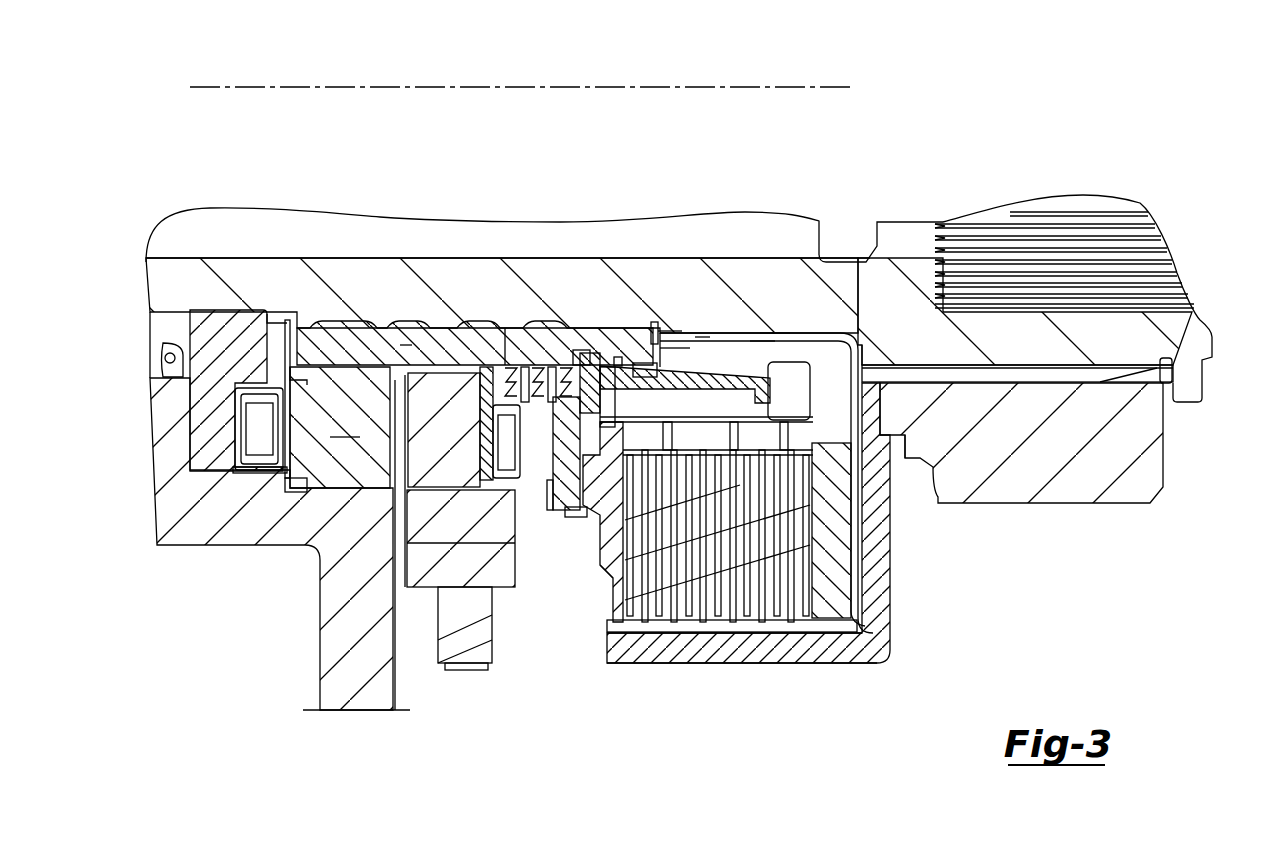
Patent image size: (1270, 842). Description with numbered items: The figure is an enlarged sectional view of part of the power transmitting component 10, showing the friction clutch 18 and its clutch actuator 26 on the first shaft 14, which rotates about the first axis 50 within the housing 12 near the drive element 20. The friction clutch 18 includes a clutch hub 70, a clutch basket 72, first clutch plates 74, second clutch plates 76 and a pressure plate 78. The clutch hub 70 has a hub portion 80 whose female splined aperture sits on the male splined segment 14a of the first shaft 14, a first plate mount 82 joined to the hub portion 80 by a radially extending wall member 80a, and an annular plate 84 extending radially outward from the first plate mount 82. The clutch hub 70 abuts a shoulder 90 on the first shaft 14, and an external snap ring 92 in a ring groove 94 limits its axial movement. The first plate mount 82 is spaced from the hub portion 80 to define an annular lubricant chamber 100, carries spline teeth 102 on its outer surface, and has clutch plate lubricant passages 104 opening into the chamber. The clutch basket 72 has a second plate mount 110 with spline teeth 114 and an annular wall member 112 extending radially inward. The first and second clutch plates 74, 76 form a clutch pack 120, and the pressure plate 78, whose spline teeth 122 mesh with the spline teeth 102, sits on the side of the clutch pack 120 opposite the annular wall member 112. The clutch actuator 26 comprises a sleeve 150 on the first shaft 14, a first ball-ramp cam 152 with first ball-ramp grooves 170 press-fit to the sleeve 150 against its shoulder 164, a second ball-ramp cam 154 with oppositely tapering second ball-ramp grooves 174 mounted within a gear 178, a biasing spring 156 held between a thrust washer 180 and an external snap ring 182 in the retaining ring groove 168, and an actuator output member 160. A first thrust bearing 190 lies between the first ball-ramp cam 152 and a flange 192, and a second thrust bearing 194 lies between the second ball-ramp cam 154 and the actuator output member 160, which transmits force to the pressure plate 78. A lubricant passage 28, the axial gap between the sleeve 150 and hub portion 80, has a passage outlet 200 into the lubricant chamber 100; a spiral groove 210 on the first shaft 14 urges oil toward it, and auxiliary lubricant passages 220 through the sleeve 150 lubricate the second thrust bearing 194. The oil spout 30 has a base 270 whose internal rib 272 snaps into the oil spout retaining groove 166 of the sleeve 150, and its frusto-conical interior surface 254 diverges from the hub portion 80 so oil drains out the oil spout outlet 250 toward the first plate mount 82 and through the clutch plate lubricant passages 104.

The power transmitting component 10 is at (1000, 140).
The housing 12 is at (173, 527).
The first shaft 14 is at (172, 275).
The male splined segment 14a is at (722, 330).
The friction clutch 18 is at (915, 612).
The drive element 20 is at (1115, 490).
The clutch actuator 26 is at (392, 547).
The lubricant passage 28 is at (645, 362).
The oil spout 30 is at (772, 340).
The first axis 50 is at (816, 86).
The clutch hub 70 is at (880, 398).
The clutch basket 72 is at (873, 653).
The first clutch plates 74 is at (880, 475).
The second clutch plates 76 is at (740, 622).
The pressure plate 78 is at (599, 590).
The hub portion 80 is at (773, 347).
The radially extending wall member 80a is at (866, 342).
The first plate mount 82 is at (618, 505).
The annular plate 84 is at (833, 543).
The shoulder 90 is at (880, 300).
The external snap ring 92 is at (678, 345).
The ring groove 94 is at (656, 322).
The lubricant chamber 100 is at (688, 408).
The spline teeth 102 is at (763, 455).
The clutch plate lubricant passages 104 is at (728, 432).
The second plate mount 110 is at (807, 653).
The annular wall member 112 is at (873, 567).
The spline teeth 114 is at (620, 632).
The clutch pack 120 is at (690, 600).
The spline teeth 122 is at (573, 505).
The sleeve 150 is at (340, 330).
The first ball-ramp cam 152 is at (316, 460).
The second ball-ramp cam 154 is at (437, 495).
The biasing spring 156 is at (540, 368).
The actuator output member 160 is at (555, 500).
The shoulder 164 is at (290, 355).
The oil spout retaining groove 166 is at (619, 355).
The retaining ring groove 168 is at (574, 350).
The first ball-ramp grooves 170 is at (344, 437).
The second ball-ramp grooves 174 is at (442, 390).
The gear 178 is at (451, 668).
The thrust washer 180 is at (489, 480).
The external snap ring 182 is at (541, 485).
The first thrust bearing 190 is at (256, 448).
The flange 192 is at (216, 330).
The second thrust bearing 194 is at (487, 443).
The passage outlet 200 is at (702, 330).
The spiral groove 210 is at (405, 345).
The auxiliary lubricant passages 220 is at (512, 368).
The oil spout outlet 250 is at (760, 345).
The frusto-conical interior surface 254 is at (805, 420).
The base 270 is at (583, 408).
The rib 272 is at (616, 372).